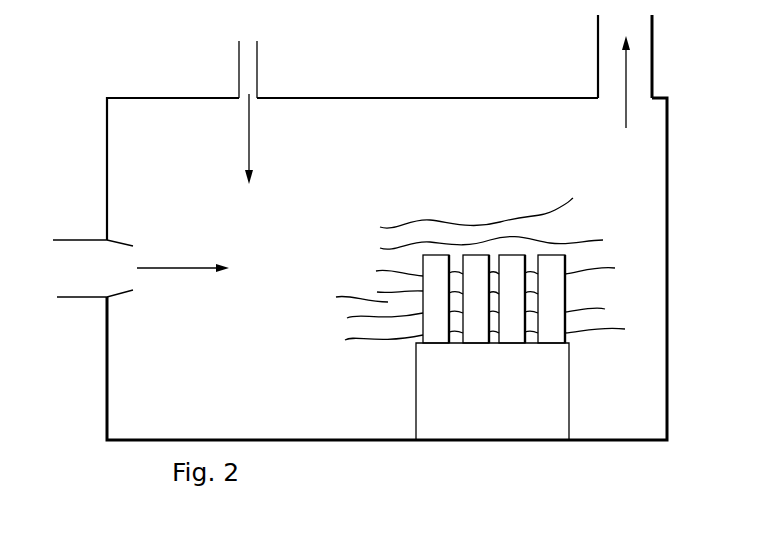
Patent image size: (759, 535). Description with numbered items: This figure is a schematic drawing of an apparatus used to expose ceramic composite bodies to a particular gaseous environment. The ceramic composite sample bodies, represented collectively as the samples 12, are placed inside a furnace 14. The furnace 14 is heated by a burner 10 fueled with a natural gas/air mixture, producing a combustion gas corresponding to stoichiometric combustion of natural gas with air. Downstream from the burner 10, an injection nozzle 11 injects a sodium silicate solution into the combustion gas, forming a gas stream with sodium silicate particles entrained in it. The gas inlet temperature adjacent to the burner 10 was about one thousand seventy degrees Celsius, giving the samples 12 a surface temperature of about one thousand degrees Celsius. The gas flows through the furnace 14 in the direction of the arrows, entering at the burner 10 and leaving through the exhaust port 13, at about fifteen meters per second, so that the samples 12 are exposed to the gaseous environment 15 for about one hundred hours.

The burner 10 is at (79, 298).
The injection nozzle 11 is at (239, 62).
The samples 12 is at (565, 292).
The exhaust port 13 is at (652, 45).
The furnace 14 is at (371, 98).
The gaseous environment 15 is at (364, 352).